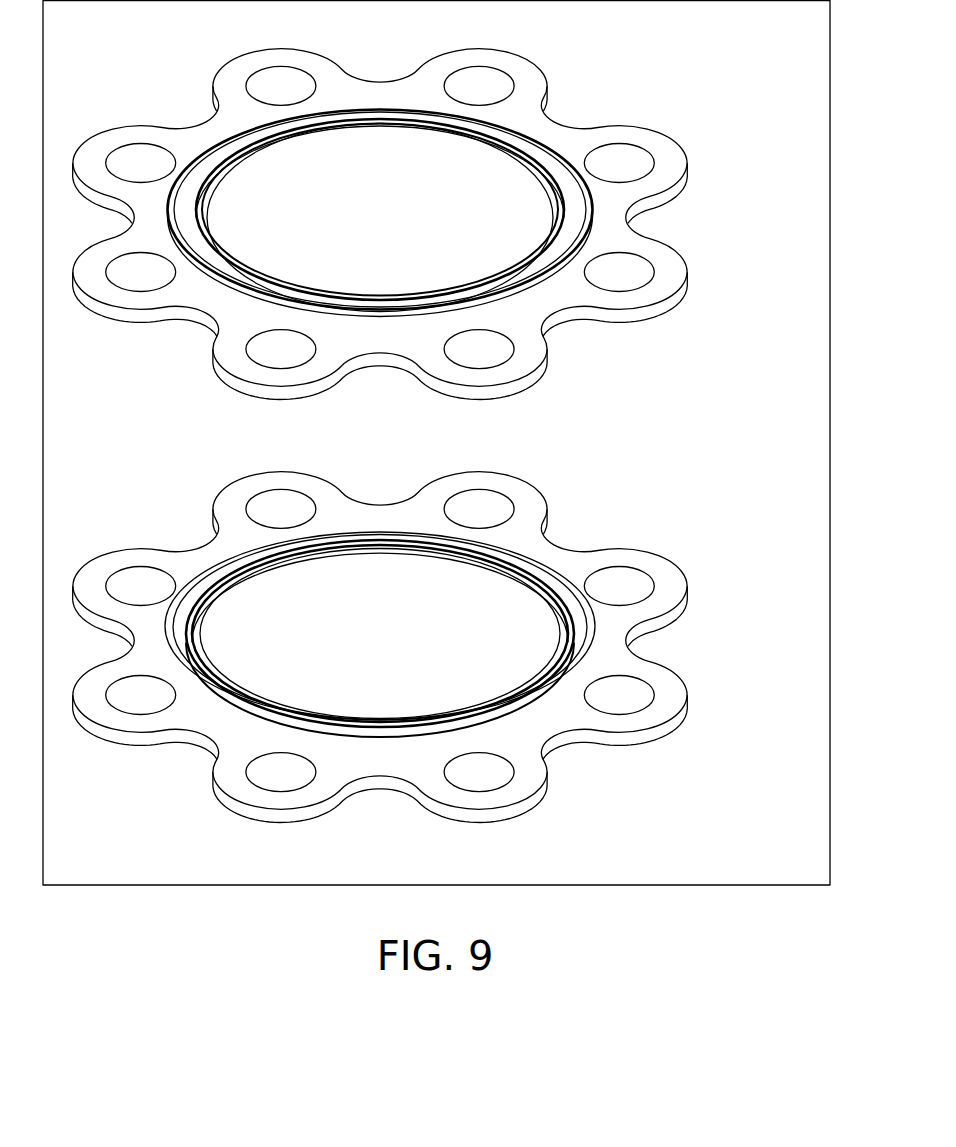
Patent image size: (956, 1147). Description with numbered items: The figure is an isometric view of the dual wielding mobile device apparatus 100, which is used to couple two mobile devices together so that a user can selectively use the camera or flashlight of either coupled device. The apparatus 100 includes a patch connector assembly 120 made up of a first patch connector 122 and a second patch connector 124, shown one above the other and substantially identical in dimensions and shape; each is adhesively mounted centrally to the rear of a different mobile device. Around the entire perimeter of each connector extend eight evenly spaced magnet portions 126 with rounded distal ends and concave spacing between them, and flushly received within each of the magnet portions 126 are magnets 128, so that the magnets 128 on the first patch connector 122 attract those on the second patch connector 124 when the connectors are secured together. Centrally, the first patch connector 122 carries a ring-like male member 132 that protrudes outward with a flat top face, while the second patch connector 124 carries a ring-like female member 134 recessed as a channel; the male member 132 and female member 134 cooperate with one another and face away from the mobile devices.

The dual wielding mobile device apparatus 100 is at (636, 56).
The patch connector assembly 120 is at (694, 168).
The first patch connector 122 is at (690, 278).
The second patch connector 124 is at (690, 697).
The magnet portions 126 is at (98, 167).
The magnets 128 is at (287, 92).
The male member 132 is at (377, 117).
The female member 134 is at (377, 540).